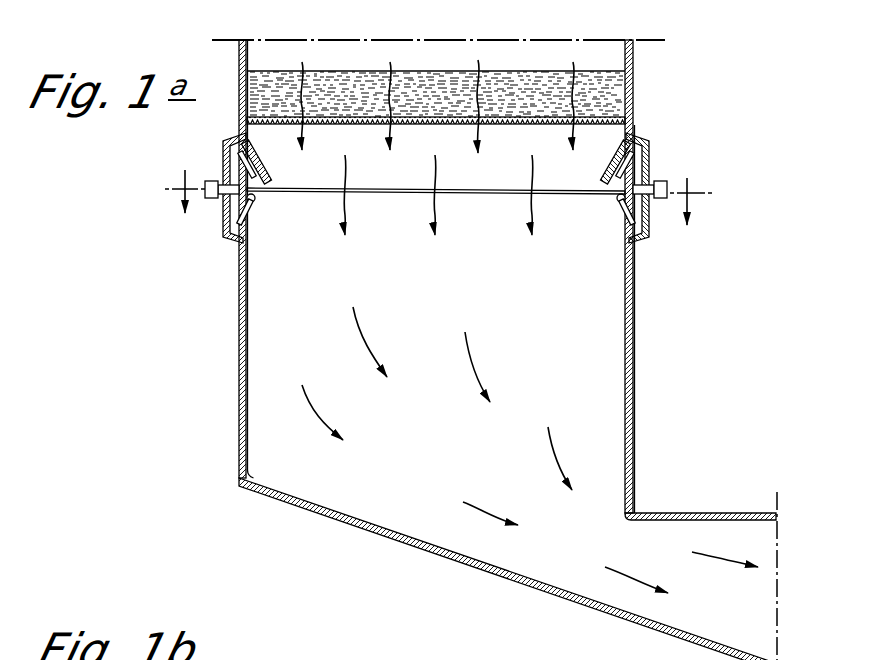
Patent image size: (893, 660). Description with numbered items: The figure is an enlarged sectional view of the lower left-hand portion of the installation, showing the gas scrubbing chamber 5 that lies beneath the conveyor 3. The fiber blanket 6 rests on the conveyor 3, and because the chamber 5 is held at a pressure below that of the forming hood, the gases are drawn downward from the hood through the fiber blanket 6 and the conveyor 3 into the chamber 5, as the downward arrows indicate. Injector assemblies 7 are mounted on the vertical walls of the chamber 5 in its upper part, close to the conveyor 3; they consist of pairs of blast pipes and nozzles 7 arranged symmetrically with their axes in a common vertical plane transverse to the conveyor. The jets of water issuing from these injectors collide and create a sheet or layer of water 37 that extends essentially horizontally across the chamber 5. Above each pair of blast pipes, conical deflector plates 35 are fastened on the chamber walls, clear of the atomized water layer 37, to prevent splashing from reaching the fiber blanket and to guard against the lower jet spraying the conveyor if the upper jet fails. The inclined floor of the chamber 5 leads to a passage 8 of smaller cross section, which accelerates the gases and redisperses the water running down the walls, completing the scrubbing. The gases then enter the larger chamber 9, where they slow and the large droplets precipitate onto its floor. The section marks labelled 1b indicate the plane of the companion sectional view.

The conveyor 3 is at (374, 122).
The chamber 5 is at (280, 332).
The fiber blanket 6 is at (417, 80).
The injector assemblies 7 is at (222, 215).
The passage 8 is at (592, 565).
The chamber 9 is at (724, 537).
The conical deflector plates 35 is at (250, 175).
The layer of water 37 is at (496, 198).
The section line 1b is at (726, 165).